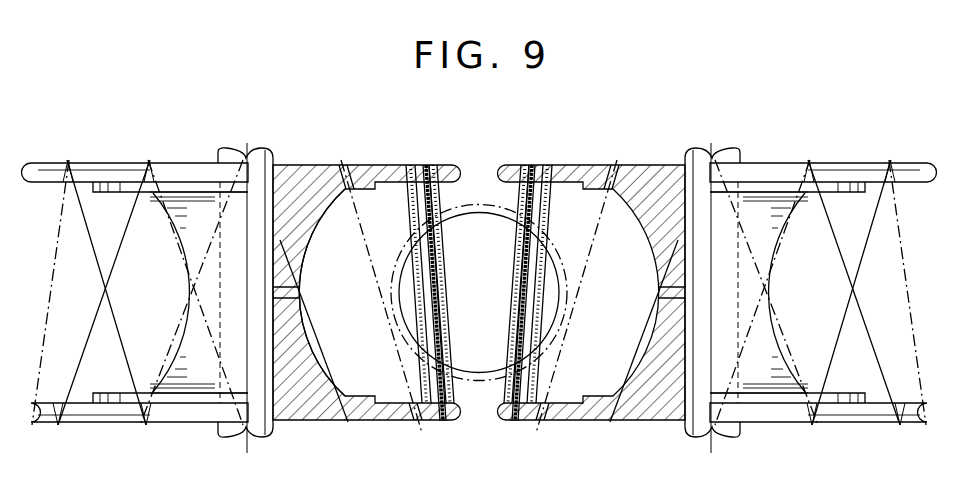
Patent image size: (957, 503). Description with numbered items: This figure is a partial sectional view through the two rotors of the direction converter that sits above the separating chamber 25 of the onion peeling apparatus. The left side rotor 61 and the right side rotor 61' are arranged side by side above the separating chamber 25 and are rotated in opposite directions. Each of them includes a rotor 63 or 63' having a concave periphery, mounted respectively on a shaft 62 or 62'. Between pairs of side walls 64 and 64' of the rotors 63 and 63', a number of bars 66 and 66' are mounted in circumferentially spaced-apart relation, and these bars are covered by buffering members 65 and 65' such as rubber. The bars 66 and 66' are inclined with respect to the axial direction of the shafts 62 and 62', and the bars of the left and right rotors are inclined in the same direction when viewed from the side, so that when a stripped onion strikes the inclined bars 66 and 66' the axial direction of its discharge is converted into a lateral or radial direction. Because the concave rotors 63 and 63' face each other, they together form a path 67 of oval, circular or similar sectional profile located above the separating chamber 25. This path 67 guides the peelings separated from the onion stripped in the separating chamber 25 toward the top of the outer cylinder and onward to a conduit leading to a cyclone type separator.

The separating chamber 25 is at (480, 385).
The left side rotor 61 is at (135, 260).
The right side rotor 61' is at (823, 260).
The shaft 62 is at (270, 306).
The shaft 62' is at (685, 306).
The rotor having a concave periphery 63 is at (261, 307).
The rotor having a concave periphery 63' is at (702, 307).
The side walls 64 is at (367, 282).
The side walls 64' is at (592, 282).
The buffering member 65 is at (460, 293).
The buffering member 65' is at (500, 293).
The bars 66 is at (451, 284).
The bars 66' is at (508, 284).
The path 67 is at (362, 300).